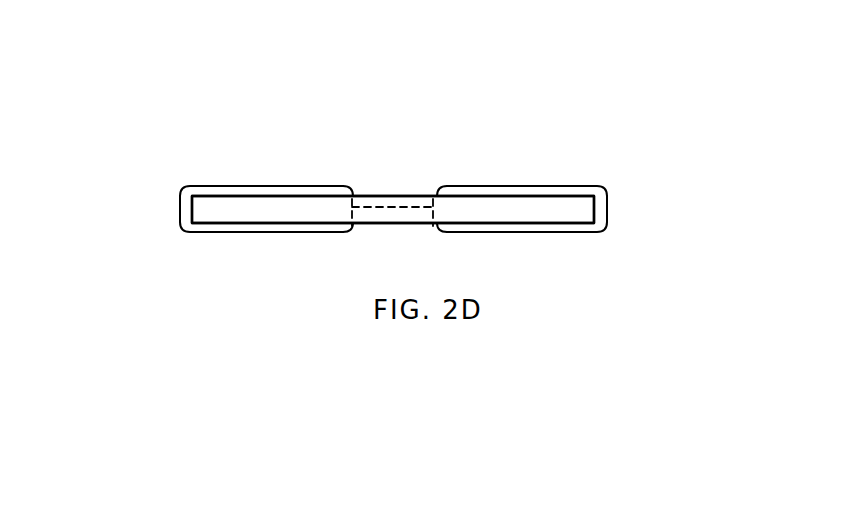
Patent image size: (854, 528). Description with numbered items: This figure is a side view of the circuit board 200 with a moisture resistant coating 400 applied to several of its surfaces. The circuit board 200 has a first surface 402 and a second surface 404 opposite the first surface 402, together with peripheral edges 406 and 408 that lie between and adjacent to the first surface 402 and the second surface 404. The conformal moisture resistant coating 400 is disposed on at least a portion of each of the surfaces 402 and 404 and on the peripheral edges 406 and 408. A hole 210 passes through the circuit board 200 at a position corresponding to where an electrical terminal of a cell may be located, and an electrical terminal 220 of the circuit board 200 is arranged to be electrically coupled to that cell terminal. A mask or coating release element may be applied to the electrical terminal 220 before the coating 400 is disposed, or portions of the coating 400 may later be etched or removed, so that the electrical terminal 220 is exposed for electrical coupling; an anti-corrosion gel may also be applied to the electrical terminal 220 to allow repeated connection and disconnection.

The circuit board 200 is at (508, 212).
The hole 210 is at (426, 204).
The electrical terminal 220 is at (372, 214).
The moisture resistant coating 400 is at (263, 185).
The first surface 402 is at (302, 185).
The second surface 404 is at (215, 233).
The peripheral edge 406 is at (607, 205).
The peripheral edge 408 is at (183, 205).